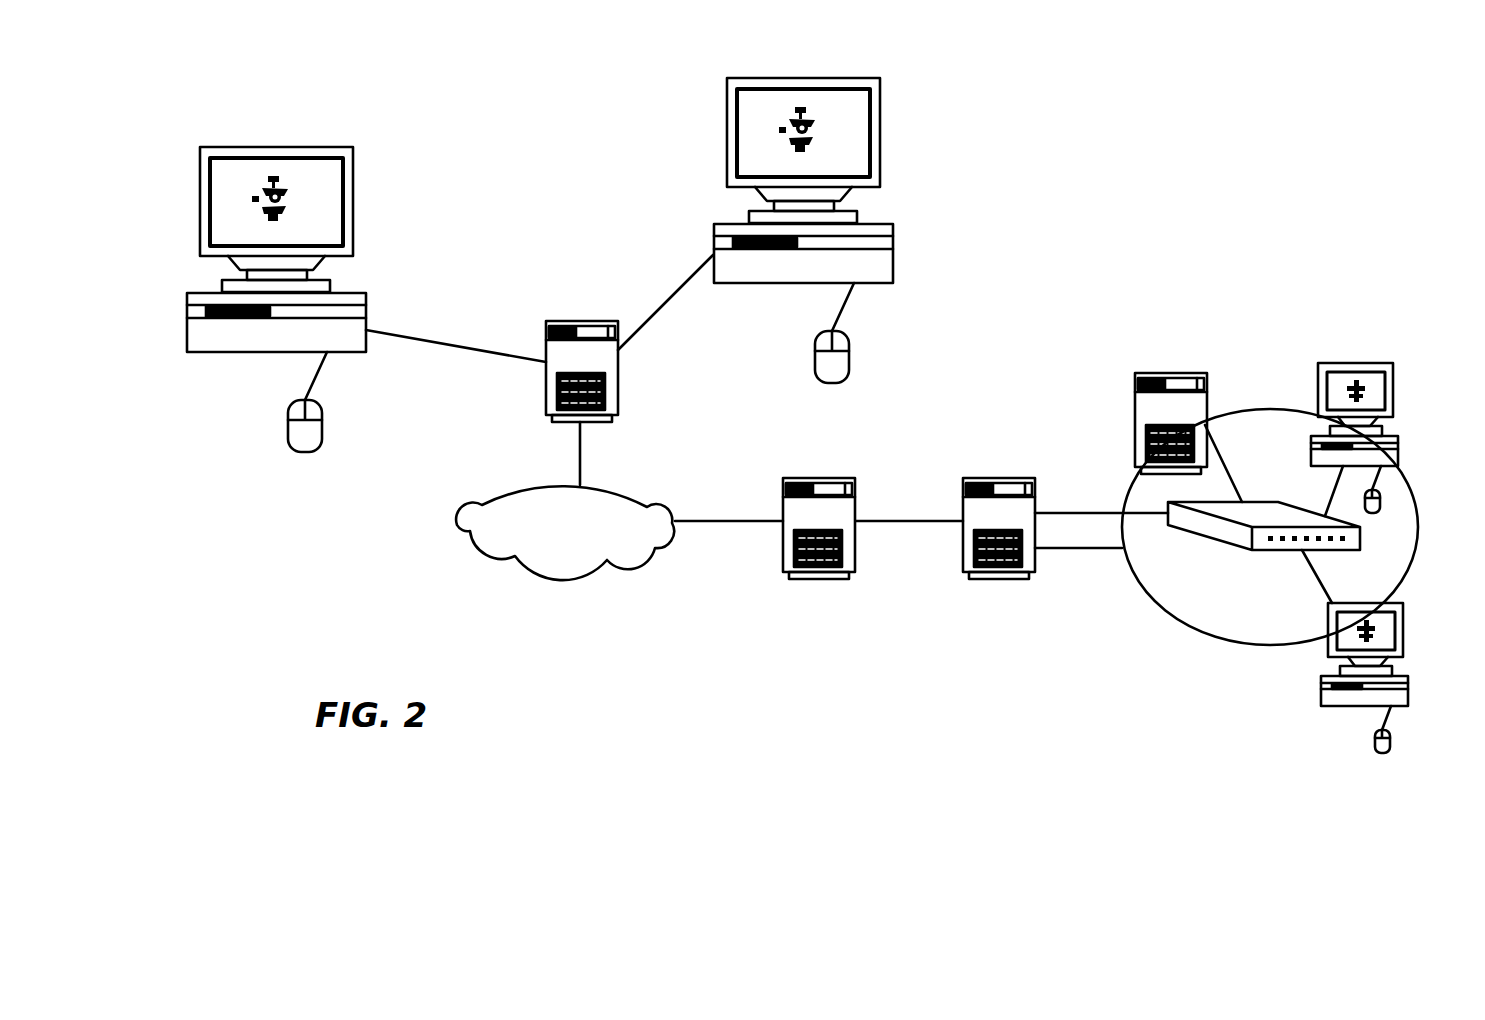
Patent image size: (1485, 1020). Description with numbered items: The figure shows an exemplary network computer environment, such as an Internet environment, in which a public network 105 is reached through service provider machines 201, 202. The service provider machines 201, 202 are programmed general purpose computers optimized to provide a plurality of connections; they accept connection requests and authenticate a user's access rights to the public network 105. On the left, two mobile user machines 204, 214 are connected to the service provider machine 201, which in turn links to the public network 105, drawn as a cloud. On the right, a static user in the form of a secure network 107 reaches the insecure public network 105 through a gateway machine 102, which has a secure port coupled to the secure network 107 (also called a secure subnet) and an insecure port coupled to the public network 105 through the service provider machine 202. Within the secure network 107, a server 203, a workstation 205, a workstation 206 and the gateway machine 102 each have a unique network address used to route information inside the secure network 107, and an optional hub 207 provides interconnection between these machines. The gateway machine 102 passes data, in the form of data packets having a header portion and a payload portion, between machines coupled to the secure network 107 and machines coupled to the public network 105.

The gateway machine 102 is at (1012, 488).
The public network 105 is at (455, 522).
The secure network 107 is at (1305, 318).
The service provider machine 201 is at (598, 327).
The service provider machine 202 is at (831, 488).
The server 203 is at (1183, 383).
The mobile user machine 204 is at (344, 147).
The workstation 205 is at (1393, 365).
The workstation 206 is at (1403, 612).
The hub 207 is at (1217, 524).
The mobile user machine 214 is at (871, 78).